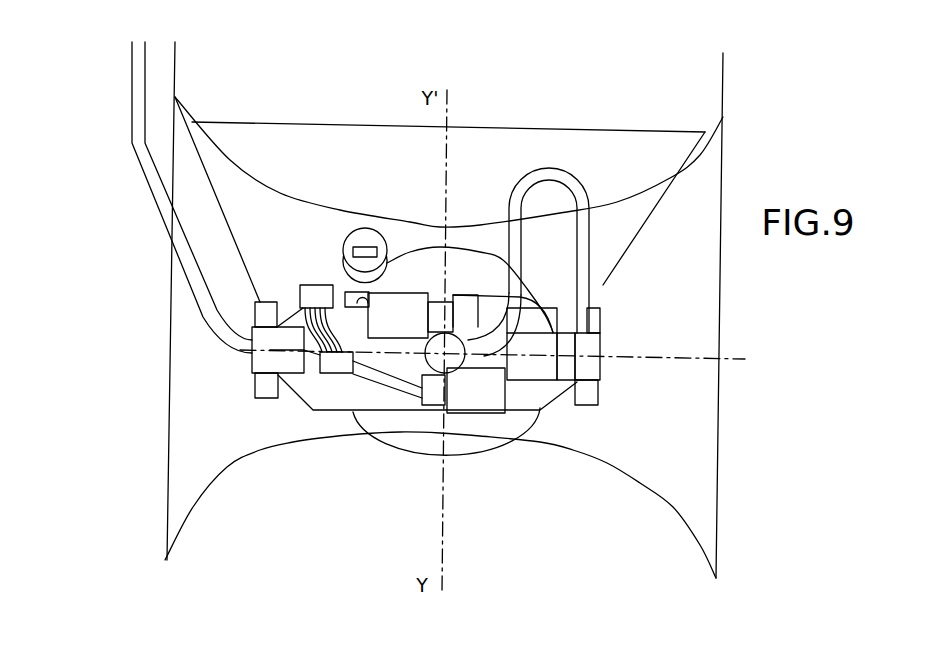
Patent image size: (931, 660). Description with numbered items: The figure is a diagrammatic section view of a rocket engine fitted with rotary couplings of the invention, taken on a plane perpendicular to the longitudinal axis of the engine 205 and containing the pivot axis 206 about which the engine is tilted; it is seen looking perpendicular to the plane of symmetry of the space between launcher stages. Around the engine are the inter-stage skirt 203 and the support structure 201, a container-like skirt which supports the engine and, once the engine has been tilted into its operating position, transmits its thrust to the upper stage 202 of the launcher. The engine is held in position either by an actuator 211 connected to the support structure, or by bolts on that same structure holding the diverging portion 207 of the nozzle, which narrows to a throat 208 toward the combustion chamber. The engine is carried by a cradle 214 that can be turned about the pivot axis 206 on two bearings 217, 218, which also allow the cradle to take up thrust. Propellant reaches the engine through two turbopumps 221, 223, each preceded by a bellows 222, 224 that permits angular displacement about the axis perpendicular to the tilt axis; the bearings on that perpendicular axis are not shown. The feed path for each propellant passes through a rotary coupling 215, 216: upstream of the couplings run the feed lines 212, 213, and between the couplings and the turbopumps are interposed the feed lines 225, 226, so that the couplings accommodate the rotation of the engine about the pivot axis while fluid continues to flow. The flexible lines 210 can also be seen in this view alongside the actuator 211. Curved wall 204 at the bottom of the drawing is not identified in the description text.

The support structure 201 is at (640, 212).
The upper stage 202 is at (710, 127).
The inter-stage skirt 203 is at (717, 482).
The bottom curved wall 204 is at (673, 506).
The engine 205 is at (461, 460).
The pivot axis 206 is at (730, 359).
The diverging portion 207 is at (497, 447).
The throat 208 is at (478, 256).
The flexible lines 210 is at (297, 307).
The actuator 211 is at (362, 237).
The feed line 212 is at (132, 141).
The feed line 213 is at (587, 237).
The cradle 214 is at (303, 402).
The rotary coupling 215 is at (257, 363).
The rotary coupling 216 is at (607, 343).
The bearing 217 is at (255, 388).
The bearing 218 is at (590, 397).
The turbopump 221 is at (497, 400).
The bellows 222 is at (432, 400).
The turbopump 223 is at (408, 303).
The bellows 224 is at (478, 292).
The feed line 225 is at (367, 373).
The feed line 226 is at (532, 300).